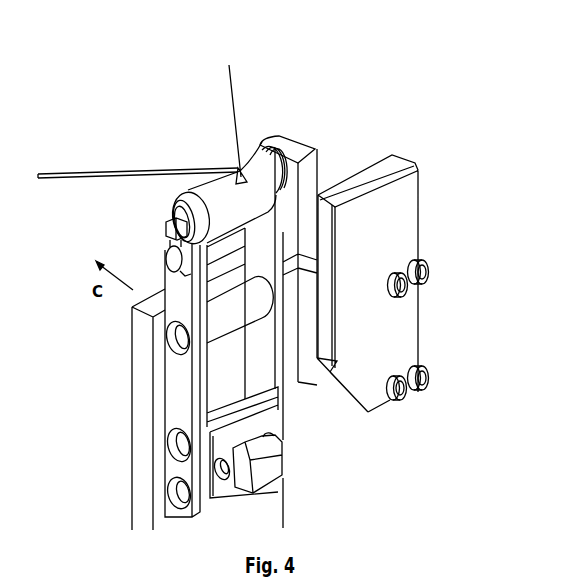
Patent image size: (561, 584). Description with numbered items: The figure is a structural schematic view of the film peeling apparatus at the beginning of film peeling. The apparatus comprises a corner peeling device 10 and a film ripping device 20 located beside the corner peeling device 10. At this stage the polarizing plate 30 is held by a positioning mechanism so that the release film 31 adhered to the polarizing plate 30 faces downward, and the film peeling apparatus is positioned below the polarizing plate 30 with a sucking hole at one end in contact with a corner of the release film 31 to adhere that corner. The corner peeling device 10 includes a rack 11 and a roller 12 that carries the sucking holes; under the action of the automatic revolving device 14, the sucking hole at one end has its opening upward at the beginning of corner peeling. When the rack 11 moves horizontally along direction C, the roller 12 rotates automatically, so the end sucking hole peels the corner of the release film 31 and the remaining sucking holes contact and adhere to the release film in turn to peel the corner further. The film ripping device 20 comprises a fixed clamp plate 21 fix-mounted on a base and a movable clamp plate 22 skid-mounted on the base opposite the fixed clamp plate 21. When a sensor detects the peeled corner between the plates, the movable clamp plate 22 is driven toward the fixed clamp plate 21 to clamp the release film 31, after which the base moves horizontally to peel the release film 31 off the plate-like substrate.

The corner peeling device 10 is at (120, 417).
The rack 11 is at (188, 372).
The roller 12 is at (252, 195).
The automatic revolving device 14 is at (168, 247).
The film ripping device 20 is at (428, 226).
The fixed clamp plate 21 is at (310, 162).
The movable clamp plate 22 is at (380, 210).
The polarizing plate 30 is at (196, 98).
The release film 31 is at (241, 178).